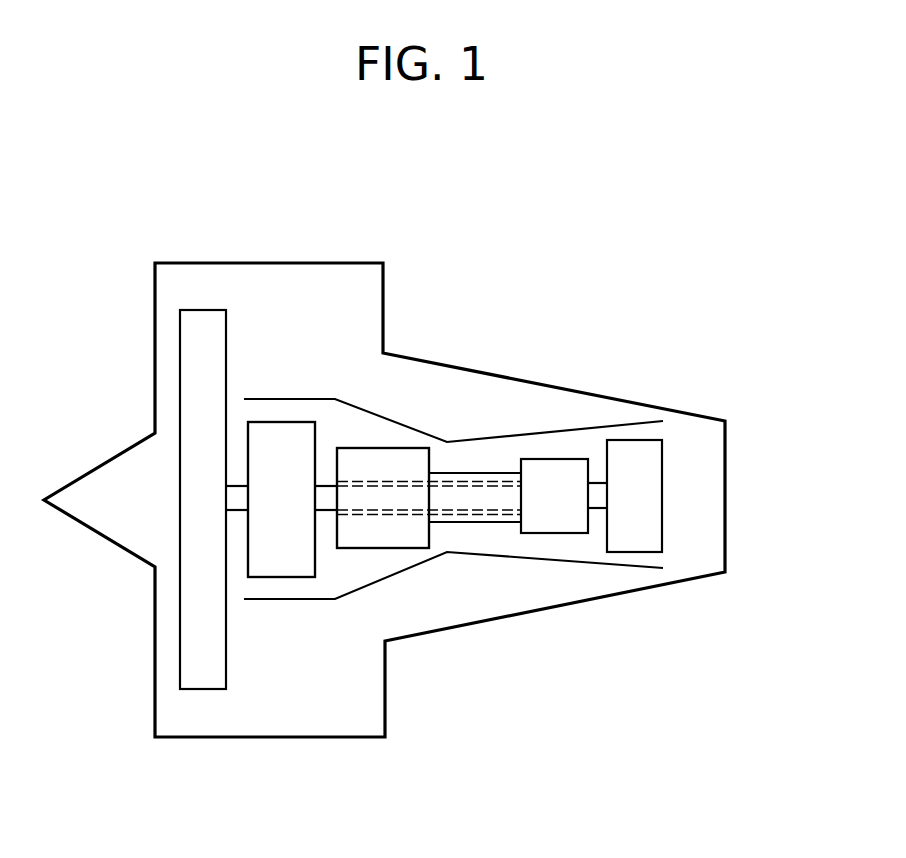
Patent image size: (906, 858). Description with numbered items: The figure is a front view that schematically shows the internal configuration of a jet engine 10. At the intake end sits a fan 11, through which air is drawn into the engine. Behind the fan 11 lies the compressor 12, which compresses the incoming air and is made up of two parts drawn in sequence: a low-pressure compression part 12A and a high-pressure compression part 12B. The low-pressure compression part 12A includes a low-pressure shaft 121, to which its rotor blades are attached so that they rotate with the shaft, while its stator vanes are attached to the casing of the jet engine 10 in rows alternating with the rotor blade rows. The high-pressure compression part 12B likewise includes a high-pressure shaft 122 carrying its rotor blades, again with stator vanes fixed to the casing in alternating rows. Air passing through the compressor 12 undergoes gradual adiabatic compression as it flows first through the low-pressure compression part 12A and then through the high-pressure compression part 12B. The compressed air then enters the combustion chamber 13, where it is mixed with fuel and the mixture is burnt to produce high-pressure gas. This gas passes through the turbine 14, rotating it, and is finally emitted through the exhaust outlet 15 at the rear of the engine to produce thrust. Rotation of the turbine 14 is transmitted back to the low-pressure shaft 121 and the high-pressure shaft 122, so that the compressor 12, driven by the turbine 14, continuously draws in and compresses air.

The jet engine 10 is at (267, 703).
The fan 11 is at (202, 320).
The compressor 12 is at (388, 212).
The low-pressure compression part 12A is at (274, 437).
The high-pressure compression part 12B is at (378, 458).
The low-pressure shaft 121 is at (327, 502).
The high-pressure shaft 122 is at (472, 477).
The combustion chamber 13 is at (490, 540).
The turbine 14 is at (580, 450).
The exhaust outlet 15 is at (680, 455).